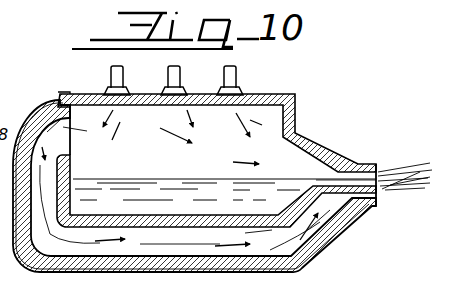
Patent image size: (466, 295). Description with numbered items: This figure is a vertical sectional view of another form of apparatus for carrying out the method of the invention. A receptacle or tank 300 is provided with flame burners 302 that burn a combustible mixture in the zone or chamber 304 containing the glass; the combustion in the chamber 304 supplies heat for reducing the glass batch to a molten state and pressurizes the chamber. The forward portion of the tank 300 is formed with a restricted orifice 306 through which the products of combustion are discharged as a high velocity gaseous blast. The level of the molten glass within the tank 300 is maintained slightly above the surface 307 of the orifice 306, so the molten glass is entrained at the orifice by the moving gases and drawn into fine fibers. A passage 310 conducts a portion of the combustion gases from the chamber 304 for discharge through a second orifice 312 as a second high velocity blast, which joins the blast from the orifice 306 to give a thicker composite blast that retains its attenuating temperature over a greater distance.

The receptacle or tank 300 is at (160, 218).
The flame burners 302 is at (173, 68).
The zone or chamber 304 is at (218, 154).
The restricted orifice 306 is at (376, 172).
The surface of the orifice 307 is at (372, 174).
The passage 310 is at (167, 250).
The orifice 312 is at (377, 196).